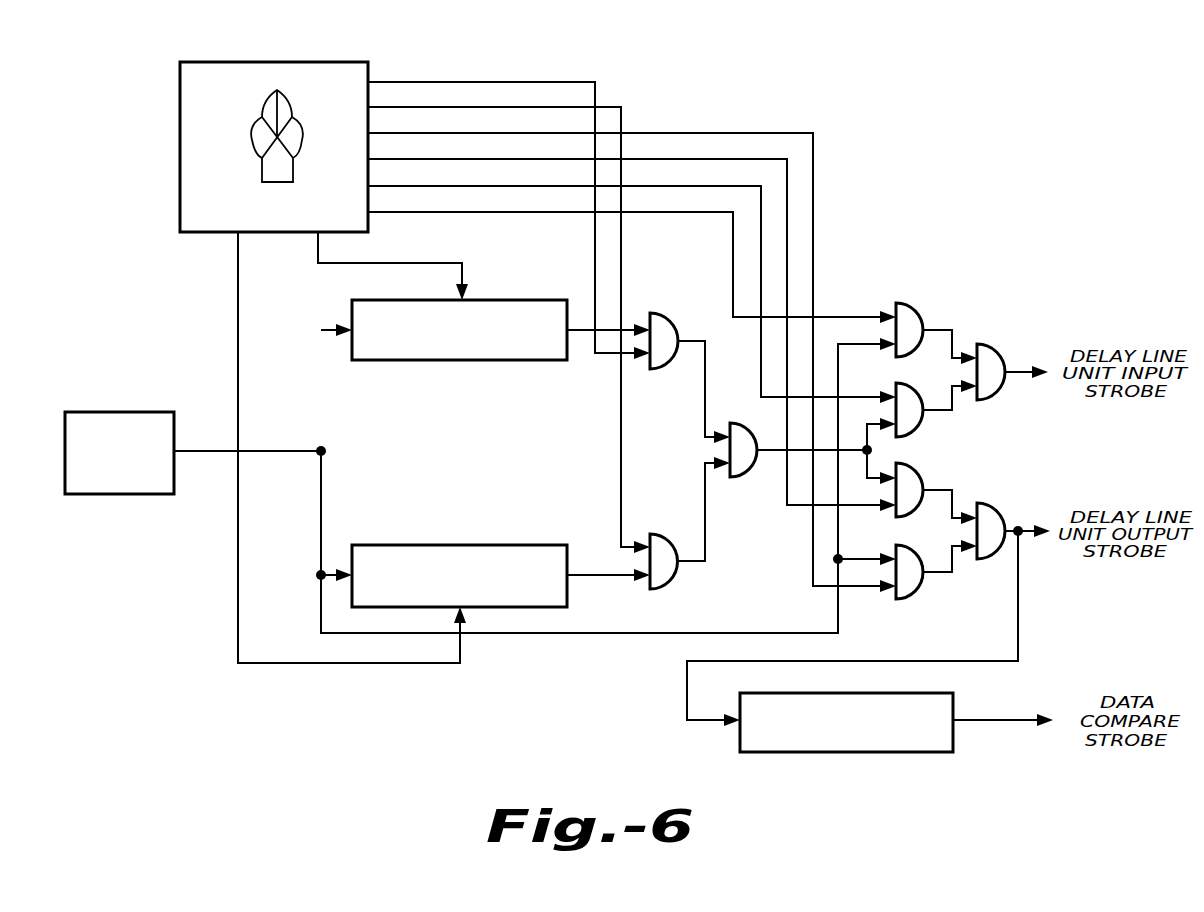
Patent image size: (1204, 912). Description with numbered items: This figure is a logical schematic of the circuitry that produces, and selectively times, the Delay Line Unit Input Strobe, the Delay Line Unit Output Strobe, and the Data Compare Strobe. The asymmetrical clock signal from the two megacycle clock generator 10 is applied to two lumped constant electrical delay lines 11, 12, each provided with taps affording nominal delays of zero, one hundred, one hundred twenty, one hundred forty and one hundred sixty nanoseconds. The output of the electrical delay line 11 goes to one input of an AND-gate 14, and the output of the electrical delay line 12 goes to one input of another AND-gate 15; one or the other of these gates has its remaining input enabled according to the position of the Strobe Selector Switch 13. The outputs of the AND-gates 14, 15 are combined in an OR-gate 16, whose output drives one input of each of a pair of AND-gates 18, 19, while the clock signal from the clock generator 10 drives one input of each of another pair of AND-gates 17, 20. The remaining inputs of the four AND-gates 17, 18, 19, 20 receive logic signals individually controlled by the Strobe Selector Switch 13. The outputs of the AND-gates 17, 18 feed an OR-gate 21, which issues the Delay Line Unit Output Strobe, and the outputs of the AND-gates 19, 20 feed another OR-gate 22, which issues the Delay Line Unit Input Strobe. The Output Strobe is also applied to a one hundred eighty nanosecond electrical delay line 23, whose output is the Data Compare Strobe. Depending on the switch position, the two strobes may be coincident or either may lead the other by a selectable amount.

The two megacycle clock generator 10 is at (135, 412).
The electrical delay line 11 is at (531, 300).
The electrical delay line 12 is at (531, 545).
The Strobe Selector Switch 13 is at (219, 62).
The AND-gate 14 is at (673, 317).
The AND-gate 15 is at (673, 538).
The OR-gate 16 is at (753, 428).
The AND-gate 17 is at (921, 308).
The AND-gate 18 is at (916, 387).
The AND-gate 19 is at (920, 469).
The AND-gate 20 is at (914, 549).
The OR-gate 21 is at (1004, 351).
The OR-gate 22 is at (1004, 511).
The 180 nanosecond electrical delay line 23 is at (922, 752).